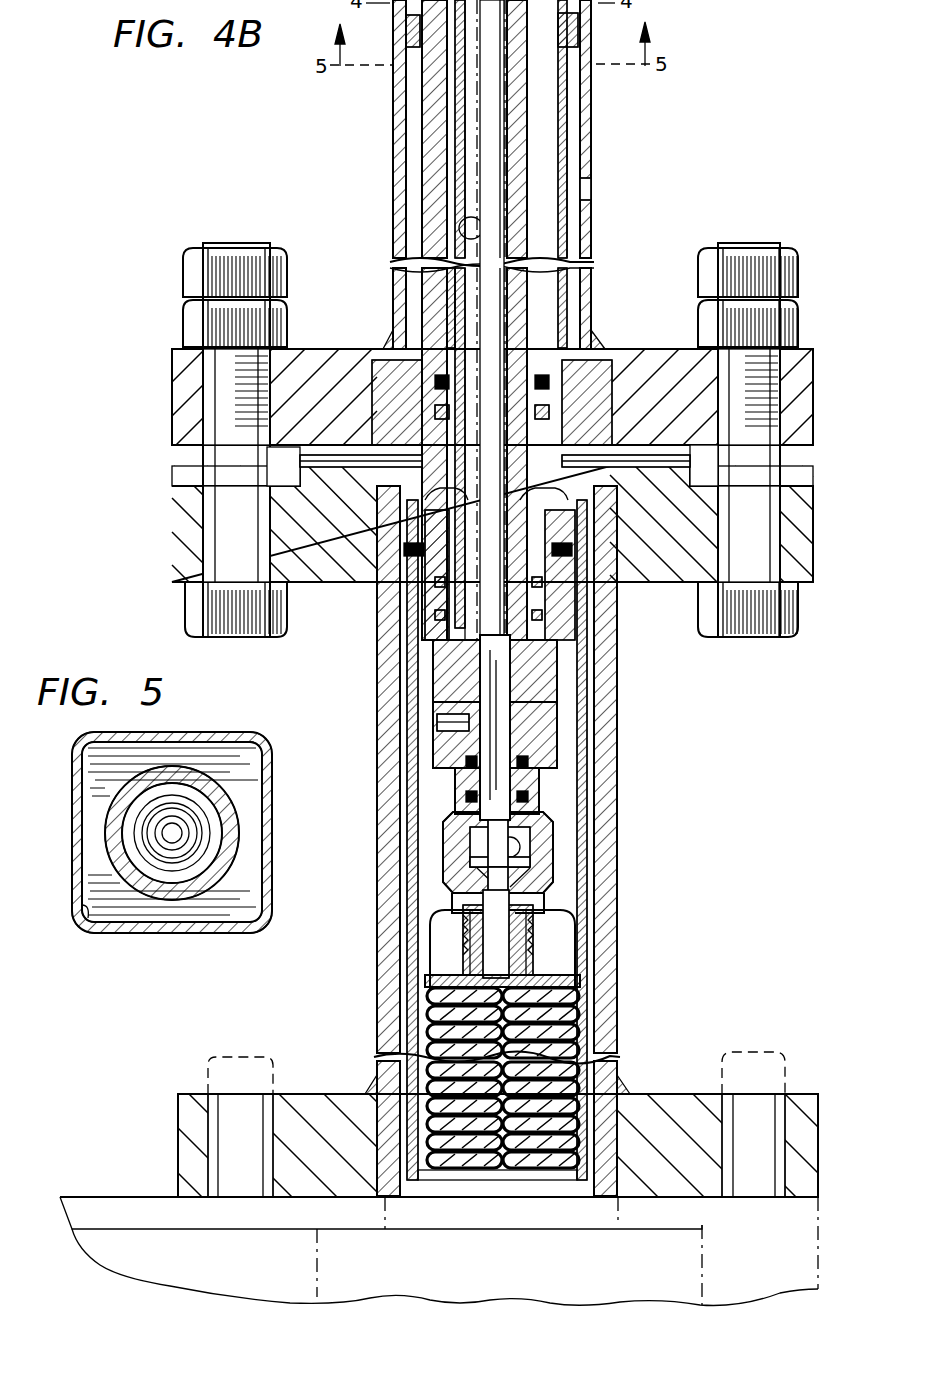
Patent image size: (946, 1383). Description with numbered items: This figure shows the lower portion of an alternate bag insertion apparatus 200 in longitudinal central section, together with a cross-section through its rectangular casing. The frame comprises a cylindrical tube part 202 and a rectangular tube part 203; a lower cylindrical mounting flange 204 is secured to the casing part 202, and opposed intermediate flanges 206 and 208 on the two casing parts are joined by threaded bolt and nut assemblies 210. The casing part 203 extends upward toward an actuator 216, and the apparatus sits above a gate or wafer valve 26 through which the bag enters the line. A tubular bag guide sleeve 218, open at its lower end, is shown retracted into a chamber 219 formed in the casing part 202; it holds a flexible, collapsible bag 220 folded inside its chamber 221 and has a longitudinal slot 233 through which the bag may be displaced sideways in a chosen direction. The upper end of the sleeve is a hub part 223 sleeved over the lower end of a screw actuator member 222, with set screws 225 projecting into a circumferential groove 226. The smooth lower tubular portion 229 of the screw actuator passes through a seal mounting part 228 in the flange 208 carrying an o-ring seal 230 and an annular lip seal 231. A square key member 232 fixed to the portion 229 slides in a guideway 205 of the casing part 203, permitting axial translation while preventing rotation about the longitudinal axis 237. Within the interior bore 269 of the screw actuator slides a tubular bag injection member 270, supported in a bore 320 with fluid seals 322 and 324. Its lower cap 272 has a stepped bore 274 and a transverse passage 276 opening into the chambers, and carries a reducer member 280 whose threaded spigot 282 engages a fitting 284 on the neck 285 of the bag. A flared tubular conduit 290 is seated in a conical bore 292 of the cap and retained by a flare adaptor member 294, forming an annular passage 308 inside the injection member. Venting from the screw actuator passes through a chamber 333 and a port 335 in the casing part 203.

In FIG. 4B, the bag insertion apparatus 200 is at (725, 138).
In FIG. 4B, the cylindrical tube part 202 is at (553, 820).
In FIG. 4B, the rectangular tube part 203 is at (592, 157).
In FIG. 5, the rectangular tube part 203 is at (275, 772).
In FIG. 4B, the lower cylindrical mounting flange 204 is at (818, 1105).
In FIG. 5, the guideway 205 is at (75, 918).
In FIG. 4B, the intermediate flange 206 is at (815, 510).
In FIG. 4B, the intermediate flange 208 is at (808, 370).
In FIG. 4B, the threaded bolt and nut assemblies 210 is at (205, 466).
In FIG. 4B, the actuator 216 is at (575, 122).
In FIG. 4B, the bag guide sleeve 218 is at (560, 985).
In FIG. 4B, the chamber 219 is at (600, 784).
In FIG. 4B, the flexible bag 220 is at (612, 1040).
In FIG. 4B, the chamber 221 is at (590, 904).
In FIG. 4B, the screw actuator member 222 is at (548, 300).
In FIG. 4B, the hub part 223 is at (570, 634).
In FIG. 4B, the set screws 225 is at (404, 550).
In FIG. 4B, the circumferential groove 226 is at (418, 568).
In FIG. 4B, the seal mounting part 228 is at (595, 362).
In FIG. 4B, the lower tubular portion 229 is at (432, 198).
In FIG. 5, the lower tubular portion 229 is at (237, 822).
In FIG. 4B, the o-ring seal 230 is at (576, 384).
In FIG. 4B, the resilient annular lip seal 231 is at (560, 432).
In FIG. 4B, the key member 232 is at (590, 16).
In FIG. 5, the key member 232 is at (252, 888).
In FIG. 4B, the longitudinal slot 233 is at (577, 940).
In FIG. 4B, the longitudinal axis 237 is at (448, 148).
In FIG. 4B, the interior bore 269 is at (530, 240).
In FIG. 4B, the bag injection member 270 is at (460, 102).
In FIG. 5, the bag injection member 270 is at (182, 815).
In FIG. 4B, the lower cap 272 is at (557, 718).
In FIG. 4B, the stepped bore 274 is at (540, 750).
In FIG. 4B, the transverse passage 276 is at (440, 720).
In FIG. 4B, the reducer member 280 is at (553, 840).
In FIG. 4B, the threaded spigot 282 is at (470, 955).
In FIG. 4B, the fitting 284 is at (470, 970).
In FIG. 4B, the neck 285 is at (560, 983).
In FIG. 4B, the tubular conduit 290 is at (478, 60).
In FIG. 5, the tubular conduit 290 is at (150, 830).
In FIG. 4B, the conical bore 292 is at (540, 880).
In FIG. 4B, the flare adaptor member 294 is at (486, 882).
In FIG. 4B, the annular passage 308 is at (462, 220).
In FIG. 5, the annular passage 308 is at (170, 858).
In FIG. 4B, the bore 320 is at (585, 598).
In FIG. 4B, the fluid seal 322 is at (548, 582).
In FIG. 4B, the fluid seal 324 is at (557, 662).
In FIG. 4B, the chamber 333 is at (574, 142).
In FIG. 4B, the port 335 is at (585, 193).
In FIG. 4B, the gate or wafer valve 26 is at (100, 1197).